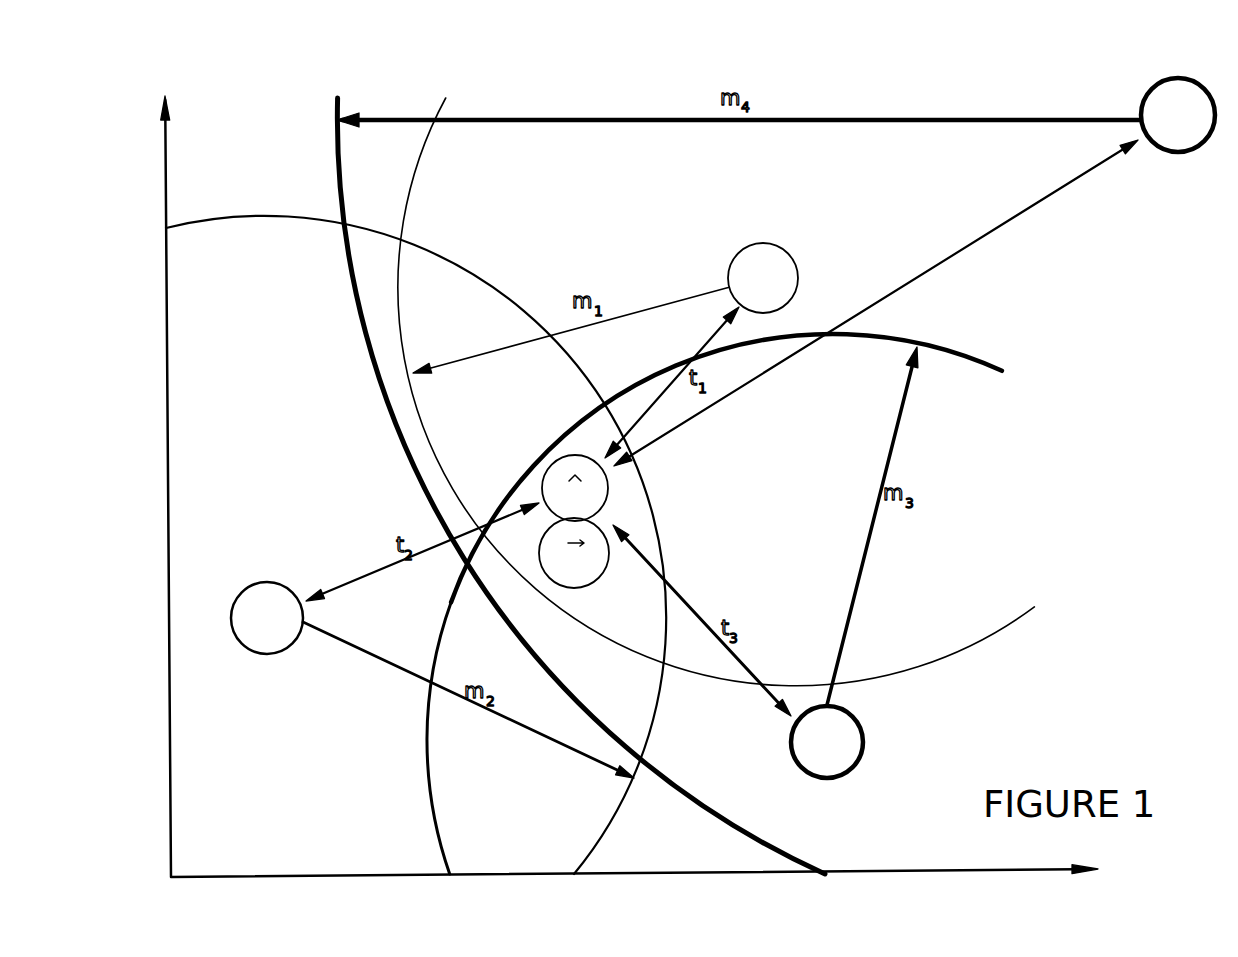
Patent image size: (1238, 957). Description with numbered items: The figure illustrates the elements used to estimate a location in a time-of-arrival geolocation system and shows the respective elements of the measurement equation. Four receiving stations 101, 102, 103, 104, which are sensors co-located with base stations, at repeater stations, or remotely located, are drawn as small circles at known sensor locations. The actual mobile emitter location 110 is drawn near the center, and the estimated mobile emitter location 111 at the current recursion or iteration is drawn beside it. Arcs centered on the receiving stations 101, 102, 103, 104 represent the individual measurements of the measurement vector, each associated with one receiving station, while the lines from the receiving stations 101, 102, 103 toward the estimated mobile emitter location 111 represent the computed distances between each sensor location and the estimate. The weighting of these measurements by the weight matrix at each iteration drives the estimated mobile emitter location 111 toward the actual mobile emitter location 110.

The receiving station 101 is at (765, 244).
The receiving station 102 is at (270, 583).
The receiving station 103 is at (864, 723).
The receiving station 104 is at (1181, 76).
The actual mobile emitter location 110 is at (607, 562).
The estimated mobile emitter location 111 is at (607, 473).